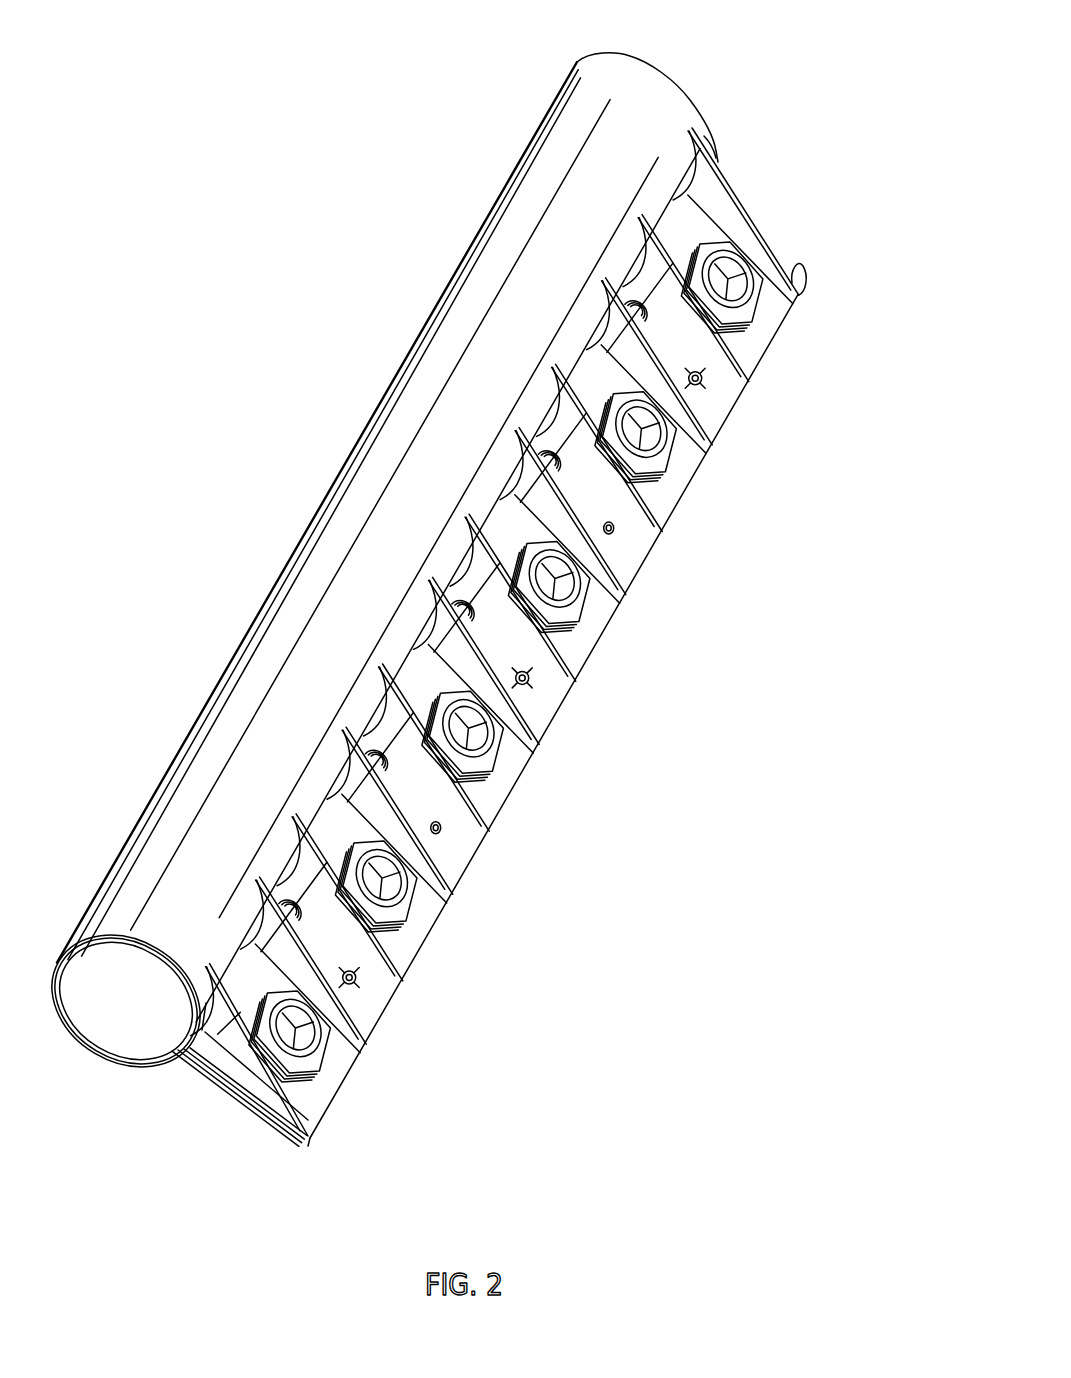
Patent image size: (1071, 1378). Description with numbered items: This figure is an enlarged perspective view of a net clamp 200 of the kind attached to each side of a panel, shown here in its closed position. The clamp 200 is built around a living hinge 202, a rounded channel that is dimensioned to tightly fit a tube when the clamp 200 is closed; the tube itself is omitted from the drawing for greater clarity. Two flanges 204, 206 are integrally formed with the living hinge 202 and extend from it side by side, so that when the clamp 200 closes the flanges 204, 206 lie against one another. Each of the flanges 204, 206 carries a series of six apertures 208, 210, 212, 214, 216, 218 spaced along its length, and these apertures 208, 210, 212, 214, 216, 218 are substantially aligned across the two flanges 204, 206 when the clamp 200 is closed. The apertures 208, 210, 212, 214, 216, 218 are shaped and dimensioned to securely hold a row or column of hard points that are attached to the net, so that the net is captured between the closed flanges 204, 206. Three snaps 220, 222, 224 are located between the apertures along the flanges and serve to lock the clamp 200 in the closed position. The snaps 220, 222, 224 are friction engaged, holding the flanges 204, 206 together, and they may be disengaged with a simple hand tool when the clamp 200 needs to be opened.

The clamp 200 is at (464, 607).
The living hinge 202 is at (670, 72).
The flange 204 is at (790, 302).
The flange 206 is at (254, 1140).
The aperture 208 is at (319, 1055).
The aperture 210 is at (406, 905).
The aperture 212 is at (492, 756).
The aperture 214 is at (585, 607).
The aperture 216 is at (666, 456).
The aperture 218 is at (753, 307).
The snap 220 is at (360, 981).
The snap 222 is at (533, 681).
The snap 224 is at (706, 381).